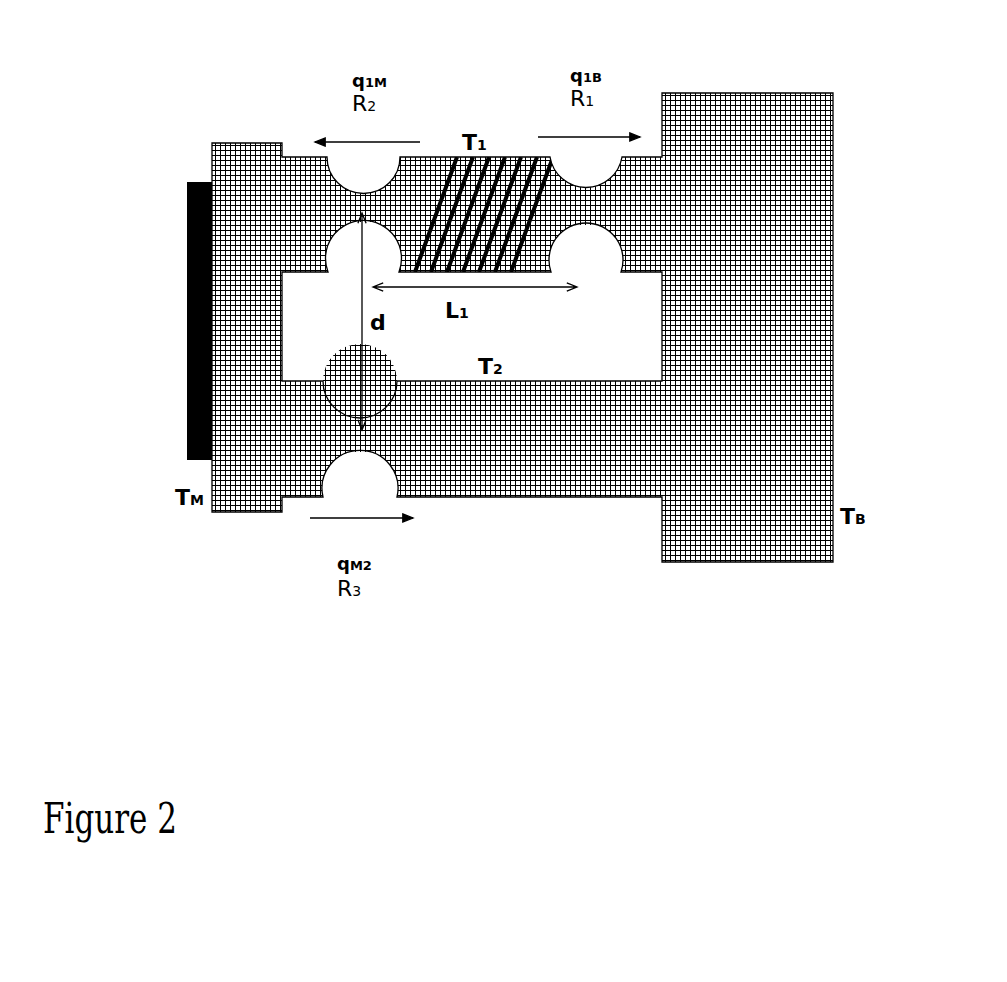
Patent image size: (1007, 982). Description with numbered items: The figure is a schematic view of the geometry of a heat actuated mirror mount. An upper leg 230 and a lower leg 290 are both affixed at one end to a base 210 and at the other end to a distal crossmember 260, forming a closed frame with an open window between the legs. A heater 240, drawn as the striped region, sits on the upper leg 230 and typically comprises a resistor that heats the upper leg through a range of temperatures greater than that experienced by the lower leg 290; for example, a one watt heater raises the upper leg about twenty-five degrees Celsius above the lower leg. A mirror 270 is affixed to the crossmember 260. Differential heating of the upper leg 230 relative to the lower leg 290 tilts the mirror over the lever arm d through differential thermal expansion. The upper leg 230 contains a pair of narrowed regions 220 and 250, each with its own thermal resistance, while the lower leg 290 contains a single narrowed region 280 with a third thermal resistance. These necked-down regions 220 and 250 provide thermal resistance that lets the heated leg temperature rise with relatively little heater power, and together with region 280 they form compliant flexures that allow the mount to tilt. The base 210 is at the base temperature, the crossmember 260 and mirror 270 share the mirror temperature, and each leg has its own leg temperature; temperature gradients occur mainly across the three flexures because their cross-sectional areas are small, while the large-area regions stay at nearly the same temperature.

The base 210 is at (776, 327).
The narrowed region 220 is at (600, 189).
The upper leg 230 is at (504, 122).
The heater 240 is at (440, 190).
The narrowed region 250 is at (334, 194).
The distal crossmember 260 is at (246, 310).
The mirror 270 is at (172, 321).
The narrowed region 280 is at (340, 458).
The lower leg 290 is at (472, 441).